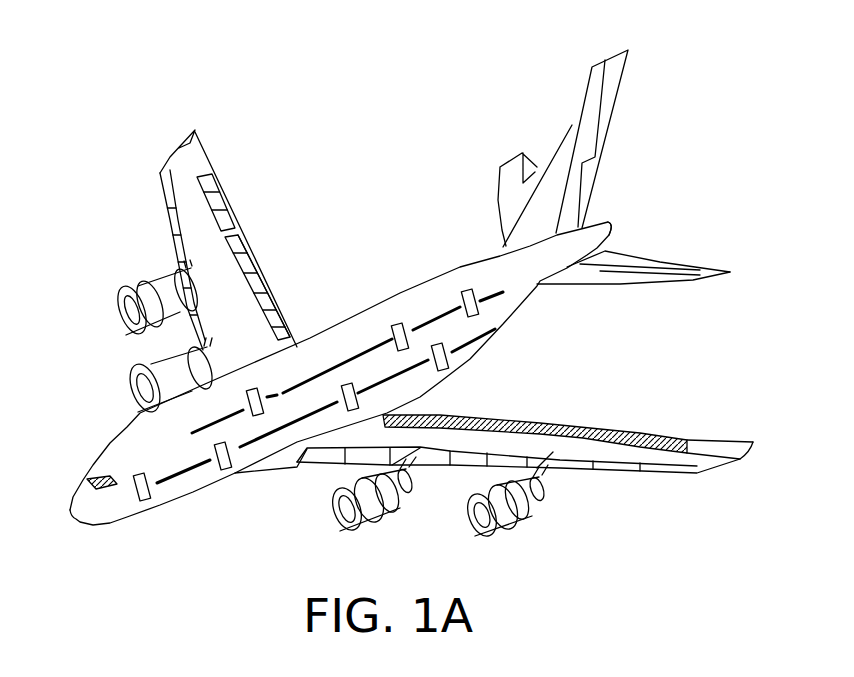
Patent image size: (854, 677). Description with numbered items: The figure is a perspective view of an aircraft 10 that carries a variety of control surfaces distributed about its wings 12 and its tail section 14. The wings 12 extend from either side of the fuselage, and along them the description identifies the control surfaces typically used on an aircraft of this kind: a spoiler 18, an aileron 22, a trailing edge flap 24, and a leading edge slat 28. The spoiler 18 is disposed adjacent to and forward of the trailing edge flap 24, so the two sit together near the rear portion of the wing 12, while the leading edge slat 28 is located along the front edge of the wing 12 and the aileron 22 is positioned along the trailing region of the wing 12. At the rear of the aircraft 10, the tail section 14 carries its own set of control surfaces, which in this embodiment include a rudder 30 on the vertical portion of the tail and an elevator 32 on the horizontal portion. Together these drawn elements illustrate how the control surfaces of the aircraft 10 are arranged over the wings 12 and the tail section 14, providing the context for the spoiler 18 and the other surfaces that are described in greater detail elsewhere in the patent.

The aircraft 10 is at (85, 163).
The wings 12 is at (182, 140).
The tail section 14 is at (536, 80).
The spoiler 18 is at (256, 276).
The aileron 22 is at (217, 180).
The trailing edge flap 24 is at (283, 300).
The leading edge slat 28 is at (173, 243).
The rudder 30 is at (602, 118).
The elevator 32 is at (667, 260).